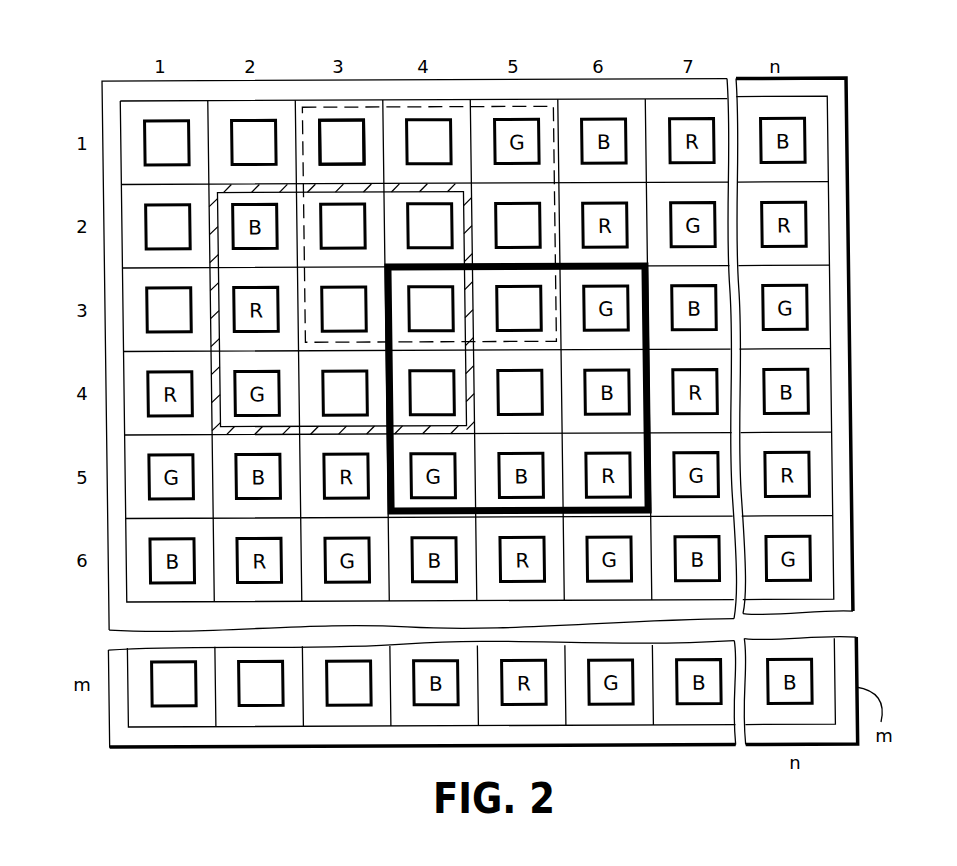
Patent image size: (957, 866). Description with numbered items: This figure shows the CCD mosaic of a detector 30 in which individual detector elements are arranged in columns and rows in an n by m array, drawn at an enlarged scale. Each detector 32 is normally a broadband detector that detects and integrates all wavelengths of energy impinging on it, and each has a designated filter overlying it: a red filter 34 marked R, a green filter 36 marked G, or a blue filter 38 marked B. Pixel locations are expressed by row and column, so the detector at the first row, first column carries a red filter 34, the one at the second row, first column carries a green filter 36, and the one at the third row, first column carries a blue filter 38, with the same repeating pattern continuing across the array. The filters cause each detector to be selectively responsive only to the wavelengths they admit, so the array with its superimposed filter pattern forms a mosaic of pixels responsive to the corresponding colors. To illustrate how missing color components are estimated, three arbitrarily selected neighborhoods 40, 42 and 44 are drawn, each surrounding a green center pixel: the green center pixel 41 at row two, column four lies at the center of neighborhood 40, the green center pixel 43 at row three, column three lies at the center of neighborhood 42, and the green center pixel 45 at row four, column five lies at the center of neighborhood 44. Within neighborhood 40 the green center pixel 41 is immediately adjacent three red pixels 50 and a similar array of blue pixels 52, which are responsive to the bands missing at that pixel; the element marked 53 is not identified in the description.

The detector 30 is at (548, 70).
The detector 32 is at (198, 716).
The red filter 34 is at (145, 127).
The green filter 36 is at (237, 124).
The blue filter 38 is at (353, 126).
The neighborhood 40 is at (402, 108).
The green center pixel 41 is at (450, 205).
The neighborhood 42 is at (212, 360).
The green center pixel 43 is at (322, 307).
The neighborhood 44 is at (634, 263).
The green center pixel 45 is at (540, 397).
The red pixels 50 is at (443, 127).
The blue pixels 52 is at (333, 125).
The pixel of third block 53 is at (452, 397).